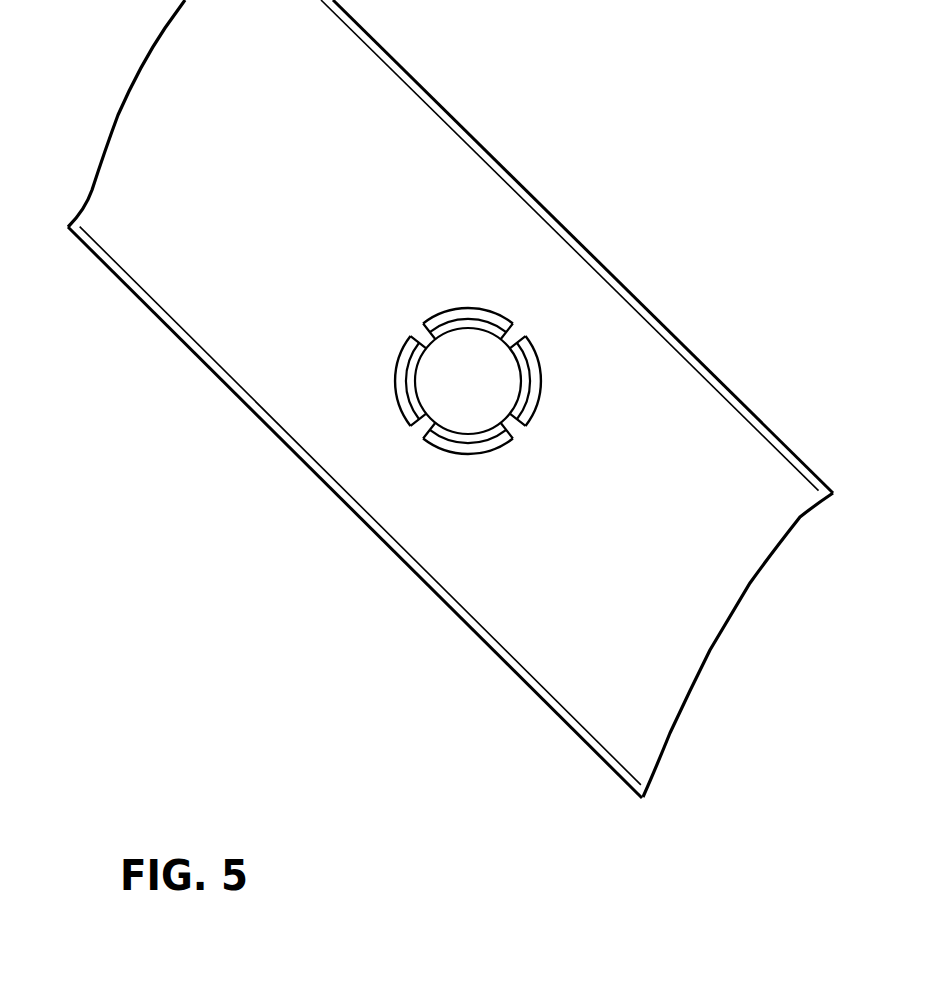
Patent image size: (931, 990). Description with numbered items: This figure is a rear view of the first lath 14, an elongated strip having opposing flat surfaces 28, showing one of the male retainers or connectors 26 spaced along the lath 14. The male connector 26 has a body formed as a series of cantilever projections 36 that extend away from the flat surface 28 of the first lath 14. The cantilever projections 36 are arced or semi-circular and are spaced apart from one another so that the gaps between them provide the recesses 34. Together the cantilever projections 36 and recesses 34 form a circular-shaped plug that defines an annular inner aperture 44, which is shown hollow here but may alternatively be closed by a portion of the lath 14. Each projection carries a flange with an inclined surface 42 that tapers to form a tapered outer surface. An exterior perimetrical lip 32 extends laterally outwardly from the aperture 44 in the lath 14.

The first lath 14 is at (541, 185).
The male connector 26 is at (470, 359).
The flat surface 28 is at (225, 298).
The exterior perimetrical lip 32 is at (444, 351).
The recess 34 is at (425, 323).
The cantilever projection 36 is at (470, 307).
The inclined surface 42 is at (473, 440).
The annular inner aperture 44 is at (460, 385).